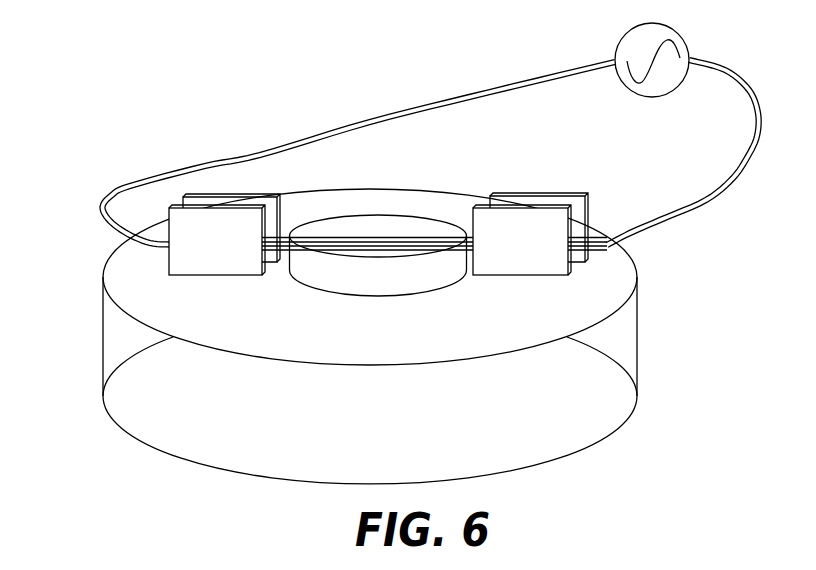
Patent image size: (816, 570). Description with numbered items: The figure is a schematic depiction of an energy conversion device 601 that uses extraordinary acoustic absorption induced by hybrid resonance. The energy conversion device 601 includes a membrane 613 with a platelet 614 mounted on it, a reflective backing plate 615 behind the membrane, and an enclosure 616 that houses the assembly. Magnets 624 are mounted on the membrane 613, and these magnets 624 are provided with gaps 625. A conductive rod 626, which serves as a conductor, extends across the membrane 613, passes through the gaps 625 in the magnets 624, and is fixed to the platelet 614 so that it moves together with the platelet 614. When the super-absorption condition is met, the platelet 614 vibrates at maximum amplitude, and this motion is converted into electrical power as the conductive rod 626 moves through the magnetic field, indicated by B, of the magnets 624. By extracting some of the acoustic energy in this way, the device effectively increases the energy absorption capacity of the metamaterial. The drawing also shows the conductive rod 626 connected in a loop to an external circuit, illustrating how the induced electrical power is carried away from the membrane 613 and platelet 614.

The energy conversion device 601 is at (78, 110).
The membrane 613 is at (337, 339).
The platelet 614 is at (363, 224).
The reflective backing plate 615 is at (486, 430).
The enclosure 616 is at (637, 340).
The magnets 624 is at (170, 275).
The gaps 625 is at (233, 197).
The conductive rod 626 is at (443, 237).
The magnetic field B is at (238, 261).